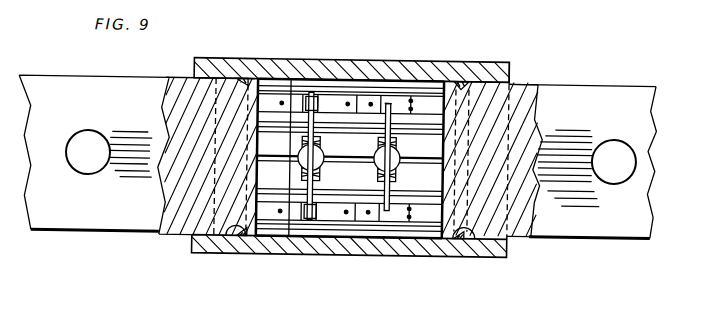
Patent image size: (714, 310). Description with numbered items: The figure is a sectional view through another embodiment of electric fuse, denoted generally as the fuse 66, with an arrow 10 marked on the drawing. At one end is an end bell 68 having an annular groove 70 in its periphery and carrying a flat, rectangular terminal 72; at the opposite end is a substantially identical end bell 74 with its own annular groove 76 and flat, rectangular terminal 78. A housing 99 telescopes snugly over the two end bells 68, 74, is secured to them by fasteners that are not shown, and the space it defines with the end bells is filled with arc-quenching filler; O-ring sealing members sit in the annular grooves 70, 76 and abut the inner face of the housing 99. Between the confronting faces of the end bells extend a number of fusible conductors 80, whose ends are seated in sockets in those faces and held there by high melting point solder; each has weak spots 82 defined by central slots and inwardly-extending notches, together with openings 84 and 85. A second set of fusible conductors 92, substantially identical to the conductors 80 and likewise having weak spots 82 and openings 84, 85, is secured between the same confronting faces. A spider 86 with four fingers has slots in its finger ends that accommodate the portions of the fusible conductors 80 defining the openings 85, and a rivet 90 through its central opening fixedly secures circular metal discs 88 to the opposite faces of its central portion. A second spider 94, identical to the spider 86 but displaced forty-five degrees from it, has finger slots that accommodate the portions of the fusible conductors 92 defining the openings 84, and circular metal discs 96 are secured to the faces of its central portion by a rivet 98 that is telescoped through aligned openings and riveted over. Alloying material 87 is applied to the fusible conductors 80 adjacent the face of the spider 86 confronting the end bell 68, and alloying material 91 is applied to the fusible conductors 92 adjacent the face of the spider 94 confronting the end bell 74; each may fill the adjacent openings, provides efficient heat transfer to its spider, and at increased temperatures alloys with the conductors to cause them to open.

The direction arrow 10 is at (289, 108).
The electric fuse 66 is at (440, 32).
The end bell 68 is at (192, 240).
The annular groove 70 is at (219, 248).
The flat, rectangular terminal 72 is at (103, 226).
The end bell 74 is at (497, 250).
The annular groove 76 is at (470, 241).
The flat, rectangular terminal 78 is at (616, 234).
The fusible conductors 80 is at (333, 98).
The weak spots 82 is at (270, 222).
The openings 84 is at (370, 104).
The openings 85 is at (312, 92).
The spider 86 is at (314, 126).
The alloying material 87 is at (307, 105).
The circular metal discs 88 is at (300, 151).
The rivet 90 is at (322, 160).
The alloying material 91 is at (389, 211).
The fusible conductors 92 is at (323, 216).
The spider 94 is at (384, 128).
The circular metal discs 96 is at (381, 176).
The rivet 98 is at (398, 160).
The housing 99 is at (490, 71).